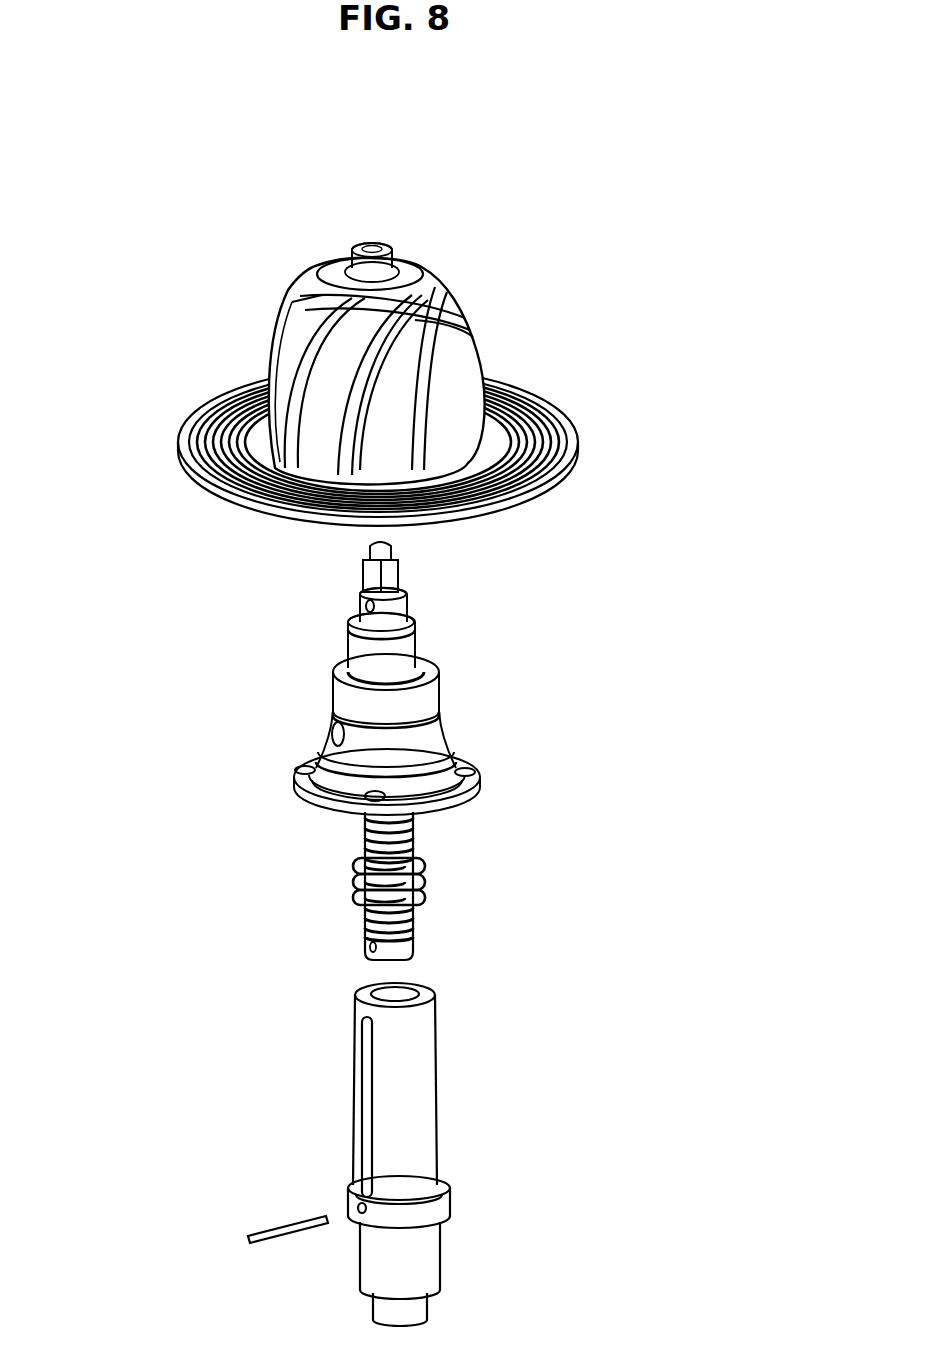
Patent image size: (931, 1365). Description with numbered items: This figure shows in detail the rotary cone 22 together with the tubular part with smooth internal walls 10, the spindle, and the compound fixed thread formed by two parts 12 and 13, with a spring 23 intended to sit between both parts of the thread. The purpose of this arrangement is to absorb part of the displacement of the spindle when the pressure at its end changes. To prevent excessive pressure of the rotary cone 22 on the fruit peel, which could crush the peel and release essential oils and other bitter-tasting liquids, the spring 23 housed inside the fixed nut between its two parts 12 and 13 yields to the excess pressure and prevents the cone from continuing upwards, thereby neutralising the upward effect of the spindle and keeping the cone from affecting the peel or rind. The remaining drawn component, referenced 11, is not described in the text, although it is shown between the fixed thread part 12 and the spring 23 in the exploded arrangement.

The rotary cone 22 is at (287, 343).
The second part of the compound fixed thread 13 is at (403, 637).
The first part of the compound fixed thread 12 is at (435, 732).
The threaded shaft 11 is at (413, 835).
The spring 23 is at (350, 886).
The tubular part with smooth internal walls 10 is at (413, 1058).